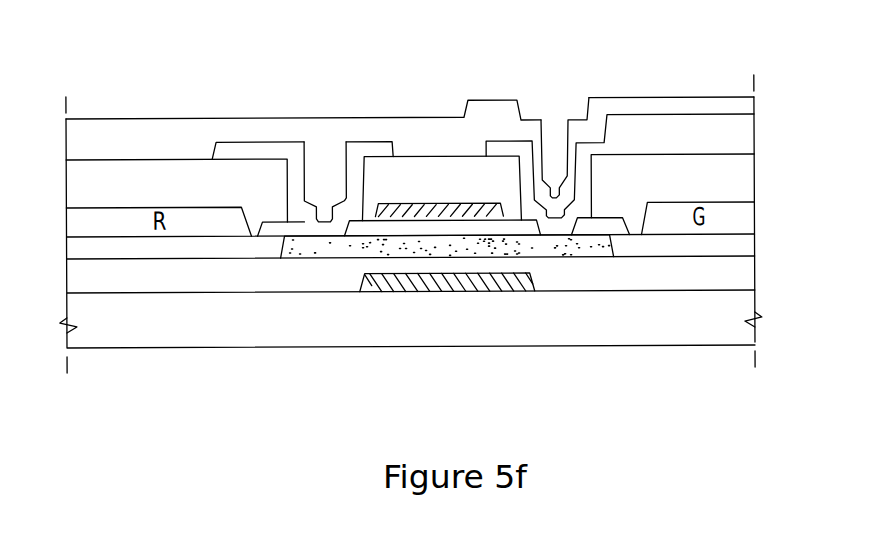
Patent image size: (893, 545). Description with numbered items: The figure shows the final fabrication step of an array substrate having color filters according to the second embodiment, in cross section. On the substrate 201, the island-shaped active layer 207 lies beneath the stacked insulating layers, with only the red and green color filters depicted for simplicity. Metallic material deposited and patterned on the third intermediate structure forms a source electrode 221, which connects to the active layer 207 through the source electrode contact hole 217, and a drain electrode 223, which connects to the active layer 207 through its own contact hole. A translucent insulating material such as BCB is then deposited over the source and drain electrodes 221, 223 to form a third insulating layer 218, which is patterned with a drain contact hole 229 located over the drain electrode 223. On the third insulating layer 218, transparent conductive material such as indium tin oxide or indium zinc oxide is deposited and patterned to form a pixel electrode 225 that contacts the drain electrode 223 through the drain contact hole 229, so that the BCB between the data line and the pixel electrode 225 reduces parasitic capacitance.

The substrate 201 is at (468, 333).
The active layer 207 is at (433, 250).
The source electrode contact hole 217 is at (328, 154).
The third insulating layer 218 is at (123, 135).
The source electrode 221 is at (270, 147).
The drain electrode 223 is at (612, 147).
The pixel electrode 225 is at (705, 97).
The drain contact hole 229 is at (562, 116).